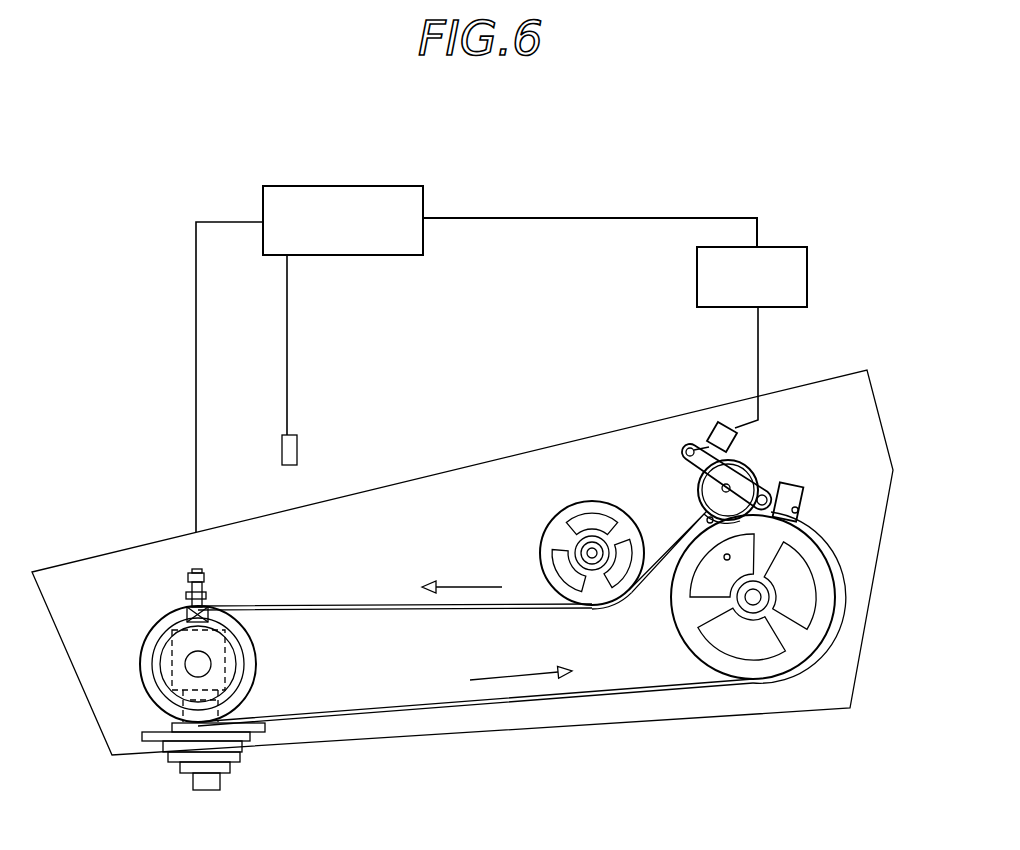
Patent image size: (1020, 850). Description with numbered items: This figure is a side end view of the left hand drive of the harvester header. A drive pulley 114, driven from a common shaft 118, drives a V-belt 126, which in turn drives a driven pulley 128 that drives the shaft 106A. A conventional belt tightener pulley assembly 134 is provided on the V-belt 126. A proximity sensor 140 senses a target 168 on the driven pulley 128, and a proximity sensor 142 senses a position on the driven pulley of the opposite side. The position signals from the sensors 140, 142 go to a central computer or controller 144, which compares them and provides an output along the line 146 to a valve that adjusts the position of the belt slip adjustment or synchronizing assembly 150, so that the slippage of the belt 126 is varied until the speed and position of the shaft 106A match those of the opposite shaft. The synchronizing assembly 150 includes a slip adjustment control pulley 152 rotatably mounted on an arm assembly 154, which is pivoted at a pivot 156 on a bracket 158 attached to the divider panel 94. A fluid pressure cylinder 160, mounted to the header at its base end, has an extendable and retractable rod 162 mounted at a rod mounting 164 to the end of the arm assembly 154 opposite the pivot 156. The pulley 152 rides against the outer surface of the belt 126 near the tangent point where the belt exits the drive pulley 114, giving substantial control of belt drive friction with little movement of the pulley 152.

The divider panel 94 is at (583, 711).
The shaft 106A is at (200, 663).
The drive pulley 114 is at (782, 247).
The common shaft 118 is at (760, 600).
The V-belt 126 is at (360, 606).
The driven pulley 128 is at (157, 680).
The belt tightener pulley assembly 134 is at (553, 512).
The proximity sensor 140 is at (202, 582).
The proximity sensor 142 is at (298, 447).
The central computer or controller 144 is at (347, 186).
The line 146 is at (651, 218).
The belt slip adjustment or synchronizing assembly 150 is at (653, 438).
The synchronizing drive friction or slip adjustment control pulley 152 is at (758, 480).
The arm assembly 154 is at (763, 487).
The pivot 156 is at (800, 487).
The bracket 158 is at (806, 521).
The fluid pressure cylinder 160 is at (718, 425).
The extendable and retractable rod 162 is at (688, 446).
The rod mounting 164 is at (686, 458).
The target 168 is at (187, 610).